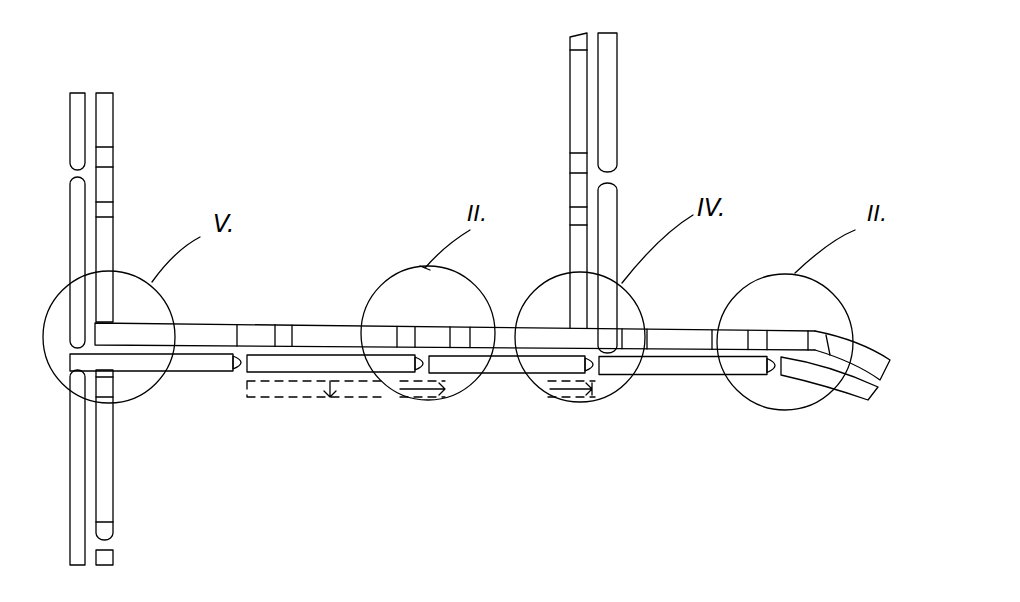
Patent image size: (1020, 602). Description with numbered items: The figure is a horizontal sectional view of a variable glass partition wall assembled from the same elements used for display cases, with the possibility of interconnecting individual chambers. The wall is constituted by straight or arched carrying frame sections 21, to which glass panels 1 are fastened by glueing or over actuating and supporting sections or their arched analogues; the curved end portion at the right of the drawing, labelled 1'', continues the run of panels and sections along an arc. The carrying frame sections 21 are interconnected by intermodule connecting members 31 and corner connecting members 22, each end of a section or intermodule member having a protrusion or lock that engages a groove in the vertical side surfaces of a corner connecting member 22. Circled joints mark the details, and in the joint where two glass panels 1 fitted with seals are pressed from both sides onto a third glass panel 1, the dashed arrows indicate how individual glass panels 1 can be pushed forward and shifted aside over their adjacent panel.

The glass panel 1 is at (442, 299).
The curved end portion of the band 1'' is at (830, 412).
The carrying frame section 21 is at (525, 338).
The corner connecting member 22 is at (642, 339).
The intermodule connecting member 31 is at (435, 336).